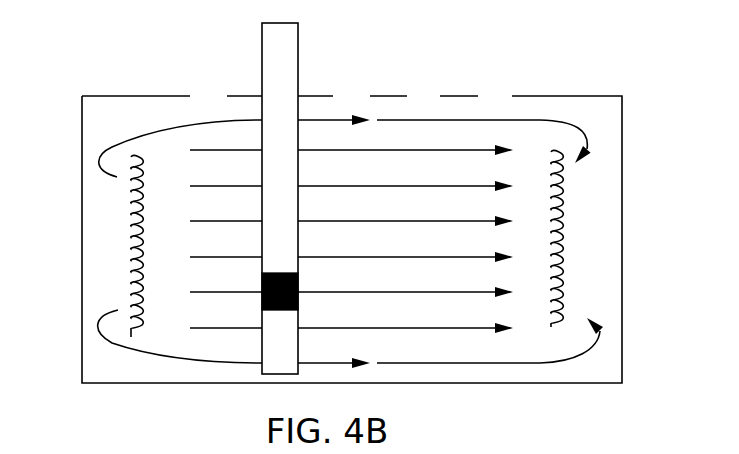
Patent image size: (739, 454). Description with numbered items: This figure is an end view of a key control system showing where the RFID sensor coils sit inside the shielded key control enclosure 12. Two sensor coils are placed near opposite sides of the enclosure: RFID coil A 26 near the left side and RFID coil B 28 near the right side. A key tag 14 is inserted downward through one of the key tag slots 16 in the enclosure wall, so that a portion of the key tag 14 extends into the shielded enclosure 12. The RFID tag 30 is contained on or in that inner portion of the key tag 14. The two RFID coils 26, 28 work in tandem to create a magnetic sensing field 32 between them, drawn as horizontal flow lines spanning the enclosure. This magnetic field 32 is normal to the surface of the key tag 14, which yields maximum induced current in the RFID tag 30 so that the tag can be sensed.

The shielded key control enclosure 12 is at (622, 292).
The key tag 14 is at (298, 58).
The key tag slots 16 is at (495, 96).
The RFID coil A 26 is at (130, 247).
The RFID coil B 28 is at (562, 233).
The RFID tag 30 is at (298, 283).
The magnetic sensing field 32 is at (373, 220).